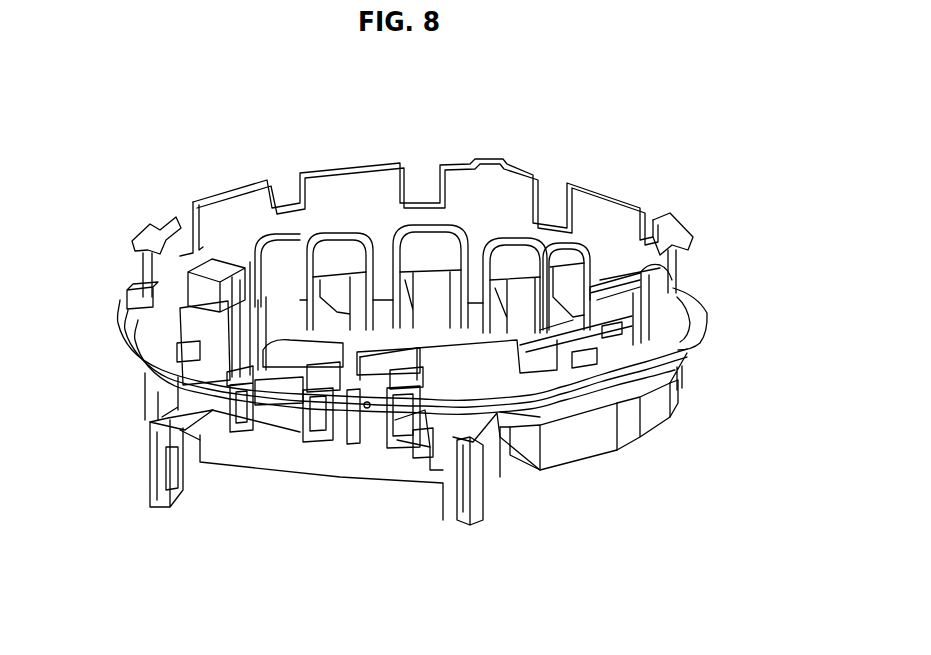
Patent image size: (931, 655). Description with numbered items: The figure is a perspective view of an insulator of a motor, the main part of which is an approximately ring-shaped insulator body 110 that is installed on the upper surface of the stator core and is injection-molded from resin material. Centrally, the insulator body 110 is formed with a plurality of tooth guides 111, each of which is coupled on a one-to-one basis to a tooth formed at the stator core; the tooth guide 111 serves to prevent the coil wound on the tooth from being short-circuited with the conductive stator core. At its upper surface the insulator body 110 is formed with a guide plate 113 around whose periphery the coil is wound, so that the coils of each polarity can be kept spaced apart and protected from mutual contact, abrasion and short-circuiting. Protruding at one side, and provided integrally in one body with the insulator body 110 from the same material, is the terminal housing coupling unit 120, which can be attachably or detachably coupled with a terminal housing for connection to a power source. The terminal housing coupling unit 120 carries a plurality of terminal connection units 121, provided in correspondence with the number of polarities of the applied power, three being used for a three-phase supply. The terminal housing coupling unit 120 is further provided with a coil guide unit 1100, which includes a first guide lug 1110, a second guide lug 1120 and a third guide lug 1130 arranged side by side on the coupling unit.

The insulator body 110 is at (203, 142).
The tooth guide 111 is at (347, 250).
The guide plate 113 is at (605, 224).
The terminal housing coupling unit 120 is at (455, 512).
The terminal connection unit 121 is at (420, 402).
The coil guide unit 1100 is at (393, 565).
The first guide lug 1110 is at (262, 395).
The second guide lug 1120 is at (353, 393).
The third guide lug 1130 is at (367, 410).